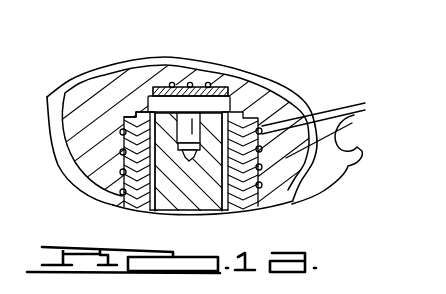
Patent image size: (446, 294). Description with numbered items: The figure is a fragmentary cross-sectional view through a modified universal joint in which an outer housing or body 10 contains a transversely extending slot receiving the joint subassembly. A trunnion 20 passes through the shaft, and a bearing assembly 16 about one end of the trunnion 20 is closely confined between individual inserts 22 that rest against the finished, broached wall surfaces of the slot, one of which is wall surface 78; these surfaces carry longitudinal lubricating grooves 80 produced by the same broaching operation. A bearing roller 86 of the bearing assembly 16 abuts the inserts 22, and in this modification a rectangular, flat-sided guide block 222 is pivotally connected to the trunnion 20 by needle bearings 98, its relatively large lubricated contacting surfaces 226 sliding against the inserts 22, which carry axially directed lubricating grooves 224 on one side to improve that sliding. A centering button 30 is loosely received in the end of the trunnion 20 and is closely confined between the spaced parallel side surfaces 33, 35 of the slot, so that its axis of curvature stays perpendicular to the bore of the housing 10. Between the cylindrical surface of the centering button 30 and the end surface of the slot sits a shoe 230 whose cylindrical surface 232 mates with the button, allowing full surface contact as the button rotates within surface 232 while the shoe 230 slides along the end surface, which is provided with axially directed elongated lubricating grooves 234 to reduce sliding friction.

The outer housing or body 10 is at (297, 112).
The bearing assembly 16 is at (134, 216).
The trunnion 20 is at (190, 198).
The inserts 22 is at (152, 206).
The centering button 30 is at (230, 72).
The side surface 33 is at (147, 106).
The side surface 35 is at (267, 92).
The wall surface 78 is at (77, 161).
The lubricating grooves 80 is at (43, 161).
The bearing roller 86 is at (236, 210).
The needle bearings 98 is at (226, 212).
The guide block 222 is at (147, 80).
The lubricating grooves 224 is at (109, 71).
The contacting surfaces 226 is at (63, 158).
The shoe 230 is at (170, 84).
The cylindrical surface 232 is at (151, 97).
The lubricating grooves 234 is at (209, 83).